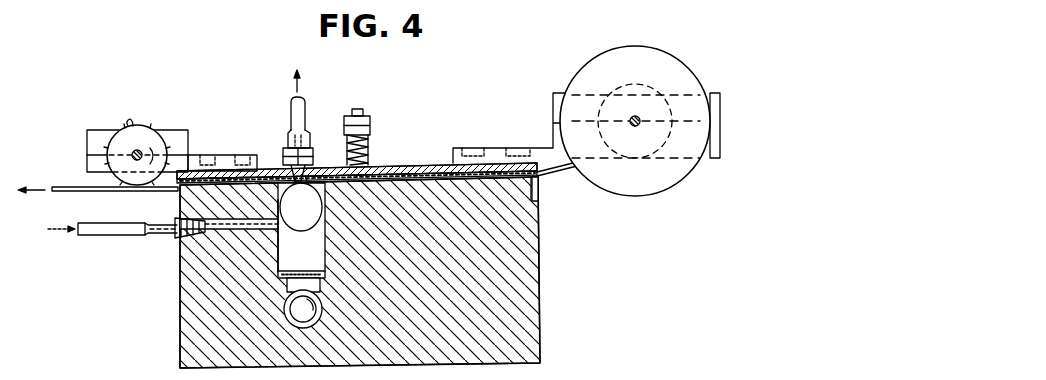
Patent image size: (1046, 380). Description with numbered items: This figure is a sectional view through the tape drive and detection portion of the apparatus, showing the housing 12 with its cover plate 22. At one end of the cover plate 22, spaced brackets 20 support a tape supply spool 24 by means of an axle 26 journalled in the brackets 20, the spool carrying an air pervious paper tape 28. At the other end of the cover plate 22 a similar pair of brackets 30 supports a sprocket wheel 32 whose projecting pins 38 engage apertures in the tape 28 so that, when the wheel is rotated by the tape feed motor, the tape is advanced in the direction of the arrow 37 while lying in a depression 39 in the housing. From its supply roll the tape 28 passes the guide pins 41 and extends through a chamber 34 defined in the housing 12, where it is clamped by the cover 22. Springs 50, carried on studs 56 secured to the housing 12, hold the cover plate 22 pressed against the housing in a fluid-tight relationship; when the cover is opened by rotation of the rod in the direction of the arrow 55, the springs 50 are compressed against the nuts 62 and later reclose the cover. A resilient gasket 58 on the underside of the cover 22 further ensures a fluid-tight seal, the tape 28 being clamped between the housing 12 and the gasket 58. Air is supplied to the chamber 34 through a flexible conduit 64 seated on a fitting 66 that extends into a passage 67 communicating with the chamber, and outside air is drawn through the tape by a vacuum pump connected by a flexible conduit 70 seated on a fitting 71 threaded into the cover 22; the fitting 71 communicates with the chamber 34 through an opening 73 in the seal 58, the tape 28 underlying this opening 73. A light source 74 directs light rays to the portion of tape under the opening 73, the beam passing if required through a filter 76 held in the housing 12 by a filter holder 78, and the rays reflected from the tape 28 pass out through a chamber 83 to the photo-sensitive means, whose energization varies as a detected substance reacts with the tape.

The housing 12 is at (539, 280).
The brackets 20 is at (722, 141).
The cover plate 22 is at (438, 163).
The tape supply spool 24 is at (662, 56).
The axle 26 is at (635, 126).
The tape 28 is at (560, 178).
The brackets 30 is at (87, 144).
The sprocket wheel 32 is at (148, 126).
The chamber 34 is at (279, 249).
The arrow 37 is at (98, 201).
The projecting pins 38 is at (130, 122).
The depression 39 is at (531, 196).
The guide pins 41 is at (539, 190).
The springs 50 is at (369, 144).
The arrow 55 is at (140, 151).
The studs 56 is at (362, 110).
The resilient gasket 58 is at (405, 170).
The nuts 62 is at (371, 124).
The flexible conduit 64 is at (97, 234).
The fitting 66 is at (178, 240).
The passage 67 is at (180, 214).
The flexible conduit 70 is at (301, 116).
The fitting 71 is at (290, 139).
The opening 73 is at (278, 196).
The light source 74 is at (322, 312).
The filter 76 is at (318, 272).
The filter holder 78 is at (323, 281).
The chamber 83 is at (312, 212).